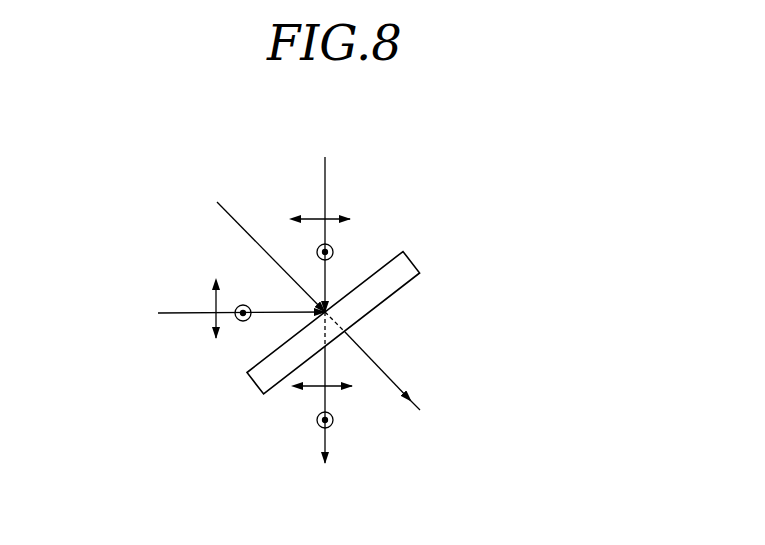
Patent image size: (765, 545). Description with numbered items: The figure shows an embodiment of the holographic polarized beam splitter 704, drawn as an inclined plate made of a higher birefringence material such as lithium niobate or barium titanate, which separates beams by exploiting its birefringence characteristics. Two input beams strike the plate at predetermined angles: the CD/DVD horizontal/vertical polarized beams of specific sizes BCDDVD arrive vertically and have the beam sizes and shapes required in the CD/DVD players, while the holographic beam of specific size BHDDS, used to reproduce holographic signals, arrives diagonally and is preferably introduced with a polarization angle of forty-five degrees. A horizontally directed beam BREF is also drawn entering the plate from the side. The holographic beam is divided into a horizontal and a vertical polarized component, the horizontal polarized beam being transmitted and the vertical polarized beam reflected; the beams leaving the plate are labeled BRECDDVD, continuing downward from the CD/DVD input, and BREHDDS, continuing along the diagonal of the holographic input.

The holographic polarized beam splitter 704 is at (481, 115).
The CD/DVD horizontal/vertical polarized beams of specific sizes BCDDVD is at (345, 219).
The holographic beam of specific size BHDDS is at (260, 241).
The reference beam B_REF BREF is at (213, 313).
The reflected/returned CD and DVD beam B^RE_CD&DVD BRECDDVD is at (362, 427).
The reflected/returned HDDS beam B^RE_HDDS BREHDDS is at (420, 386).